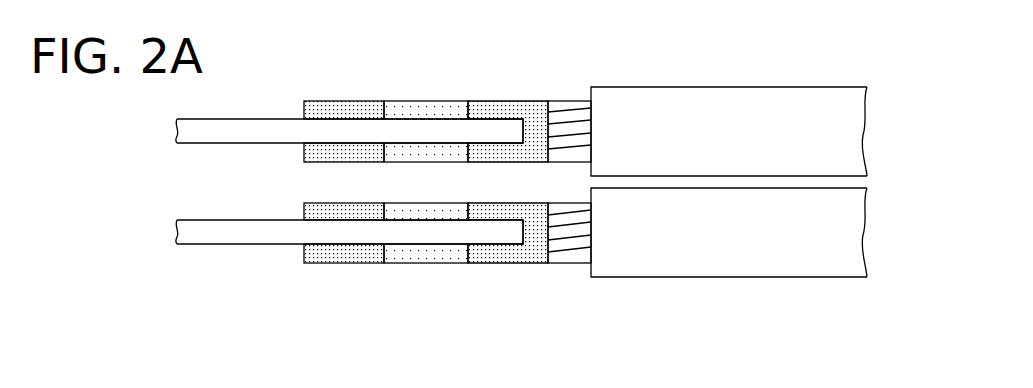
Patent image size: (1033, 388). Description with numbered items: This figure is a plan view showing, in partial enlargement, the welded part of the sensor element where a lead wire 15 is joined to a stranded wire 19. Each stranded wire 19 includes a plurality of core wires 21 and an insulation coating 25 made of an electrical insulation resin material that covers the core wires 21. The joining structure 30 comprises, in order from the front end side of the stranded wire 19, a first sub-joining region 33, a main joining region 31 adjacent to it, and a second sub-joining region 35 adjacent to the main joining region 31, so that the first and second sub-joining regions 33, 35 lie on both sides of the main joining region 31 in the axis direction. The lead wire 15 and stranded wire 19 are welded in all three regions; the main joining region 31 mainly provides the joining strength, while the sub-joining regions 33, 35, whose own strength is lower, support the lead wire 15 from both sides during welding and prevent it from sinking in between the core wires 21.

The lead wire 15 is at (238, 119).
The stranded wire 19 is at (658, 87).
The core wire 21 is at (571, 135).
The insulation coating 25 is at (713, 87).
The joining structure 30 is at (533, 41).
The main joining region 31 is at (422, 101).
The first sub-joining region 33 is at (346, 101).
The second sub-joining region 35 is at (500, 101).